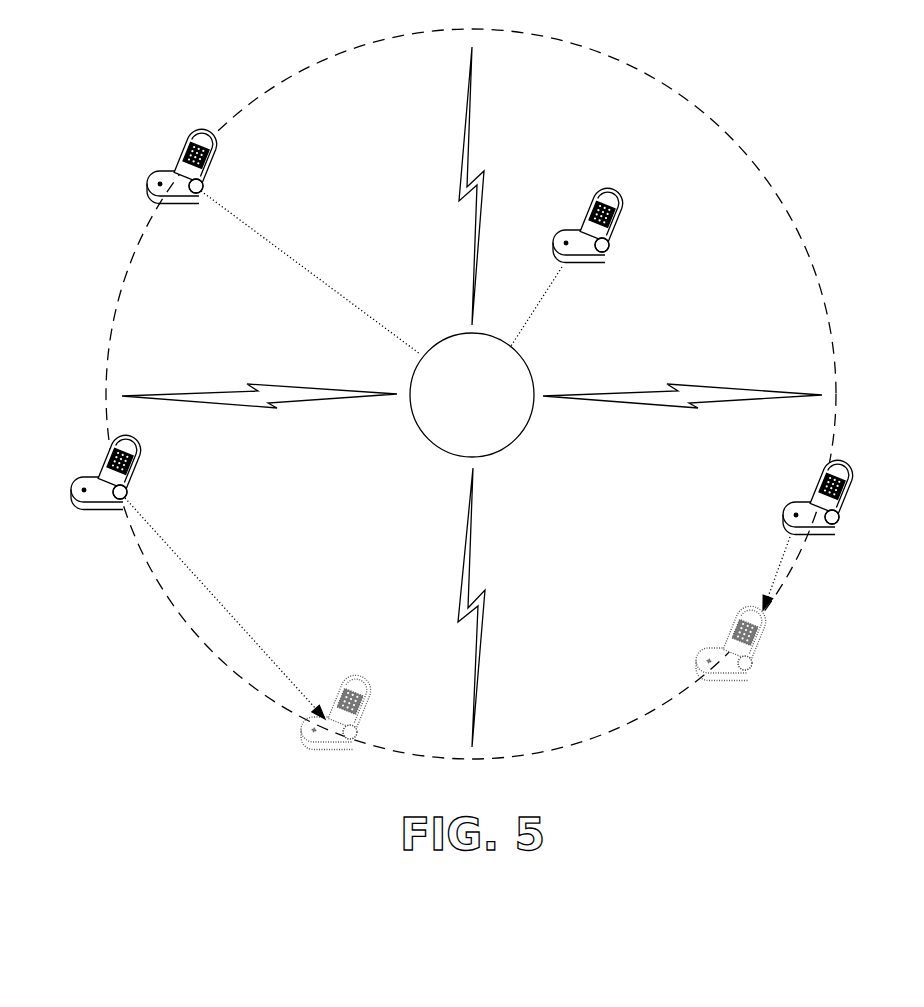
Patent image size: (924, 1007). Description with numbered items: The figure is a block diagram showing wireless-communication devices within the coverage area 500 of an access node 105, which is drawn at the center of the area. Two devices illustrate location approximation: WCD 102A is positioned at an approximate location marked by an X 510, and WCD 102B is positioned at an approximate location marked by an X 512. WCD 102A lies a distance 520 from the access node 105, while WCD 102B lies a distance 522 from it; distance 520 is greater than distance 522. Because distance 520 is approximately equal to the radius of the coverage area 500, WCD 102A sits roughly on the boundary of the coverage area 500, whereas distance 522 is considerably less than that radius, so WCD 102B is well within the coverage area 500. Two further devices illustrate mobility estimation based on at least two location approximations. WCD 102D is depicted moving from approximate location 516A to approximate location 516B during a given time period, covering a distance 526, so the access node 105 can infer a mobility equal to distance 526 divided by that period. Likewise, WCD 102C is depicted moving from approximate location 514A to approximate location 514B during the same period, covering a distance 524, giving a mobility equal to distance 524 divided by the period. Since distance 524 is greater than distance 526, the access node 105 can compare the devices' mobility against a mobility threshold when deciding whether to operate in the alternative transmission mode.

The coverage area 500 is at (768, 181).
The access node 105 is at (472, 397).
The WCD 102A is at (150, 177).
The WCD 102B is at (570, 265).
The WCD 102C is at (280, 748).
The WCD 102D is at (856, 473).
The X 510 is at (227, 188).
The X 512 is at (631, 247).
The approximate location 514A is at (160, 494).
The approximate location 514B is at (388, 735).
The approximate location 516A is at (872, 519).
The approximate location 516B is at (782, 666).
The distance 520 is at (305, 268).
The distance 522 is at (552, 285).
The distance 524 is at (202, 582).
The distance 526 is at (780, 567).